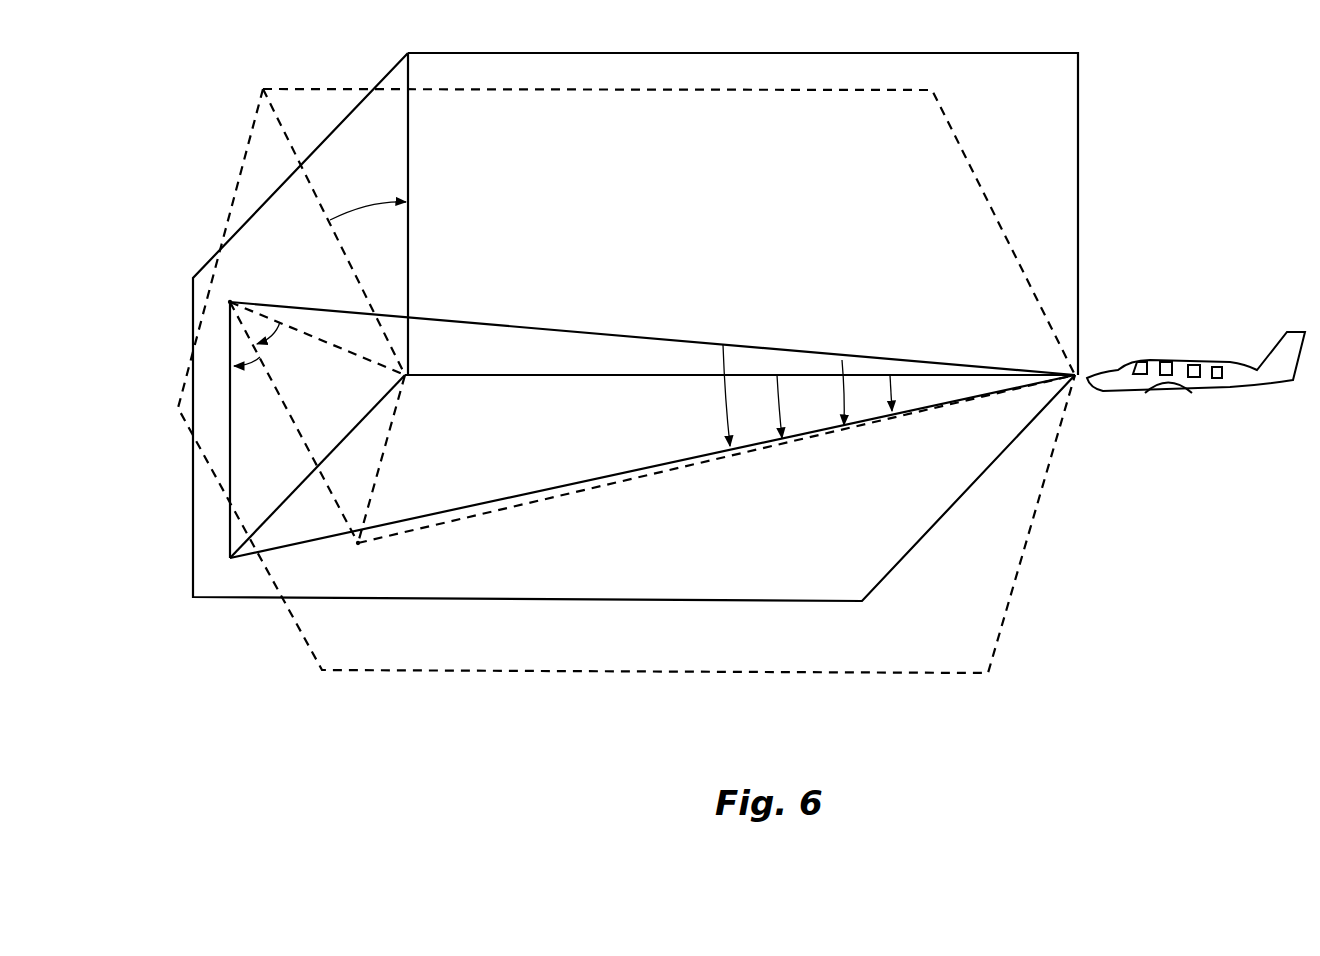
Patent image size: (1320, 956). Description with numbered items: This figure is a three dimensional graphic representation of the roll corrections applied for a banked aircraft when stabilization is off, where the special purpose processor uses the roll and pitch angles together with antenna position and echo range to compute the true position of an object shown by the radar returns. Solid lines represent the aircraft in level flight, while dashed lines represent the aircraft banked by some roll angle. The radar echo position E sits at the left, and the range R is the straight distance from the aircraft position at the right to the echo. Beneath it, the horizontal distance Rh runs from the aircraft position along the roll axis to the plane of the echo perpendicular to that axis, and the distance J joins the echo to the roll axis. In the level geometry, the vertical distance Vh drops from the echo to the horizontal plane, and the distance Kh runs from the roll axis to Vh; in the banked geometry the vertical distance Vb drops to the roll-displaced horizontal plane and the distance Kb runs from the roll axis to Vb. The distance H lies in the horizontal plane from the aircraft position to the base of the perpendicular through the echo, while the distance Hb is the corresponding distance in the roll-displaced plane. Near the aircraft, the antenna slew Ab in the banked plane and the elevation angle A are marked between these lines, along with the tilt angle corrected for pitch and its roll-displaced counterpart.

The radar echo position E is at (222, 291).
The range R is at (652, 338).
The horizontal distance from aircraft position to plane of radar echo Rh is at (740, 361).
The distance from echo to roll axis J is at (317, 338).
The vertical distance to radar echo from horizontal plane displaced by roll angle Vb is at (294, 422).
The vertical distance from radar echo to horizontal plane Vh is at (248, 430).
The distance from roll axis to Vh Kh is at (317, 466).
The distance from roll axis to Vb Kb is at (374, 516).
The distance in horizontal plane from aircraft position to base of perpendicular lin H is at (652, 466).
The distance in horizontal plane displaced by roll angle from aircraft position to b Hb is at (716, 459).
The antenna slew in banked plane Ab is at (762, 406).
The elevation angle A is at (879, 393).